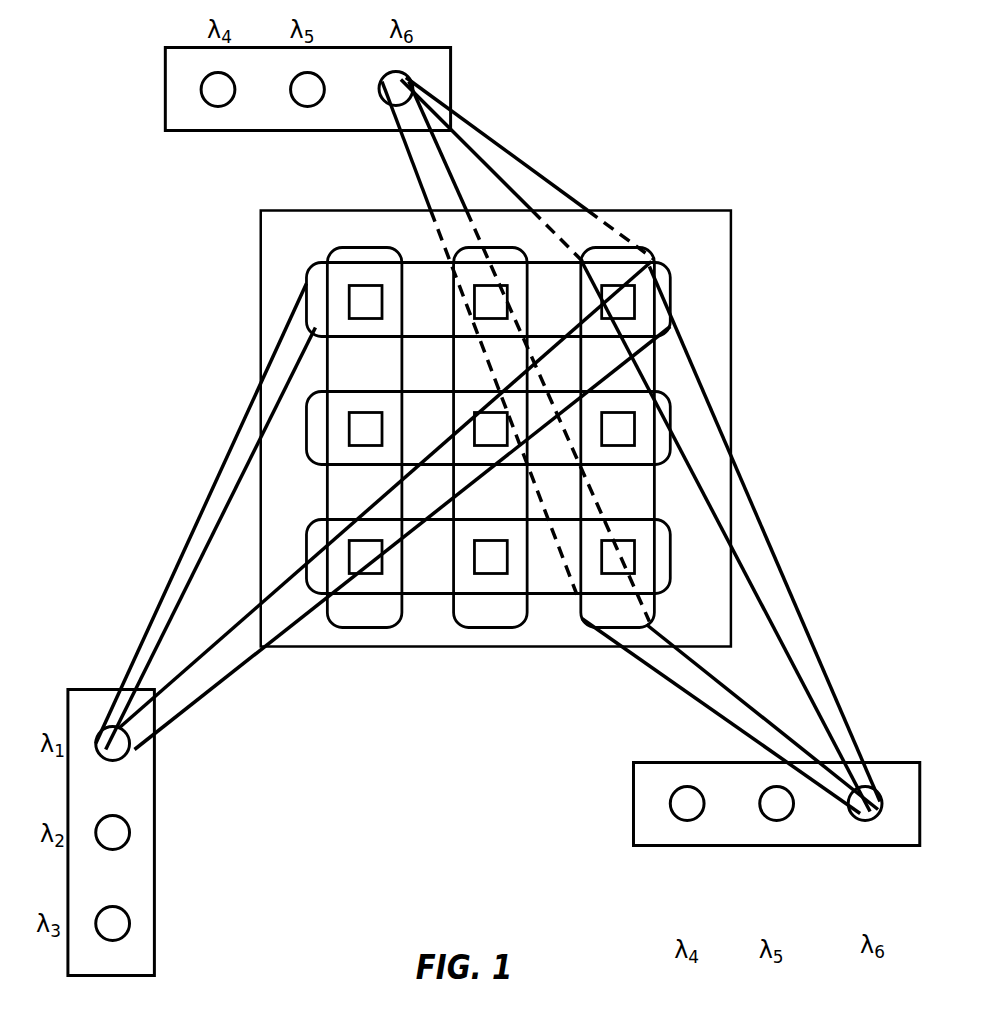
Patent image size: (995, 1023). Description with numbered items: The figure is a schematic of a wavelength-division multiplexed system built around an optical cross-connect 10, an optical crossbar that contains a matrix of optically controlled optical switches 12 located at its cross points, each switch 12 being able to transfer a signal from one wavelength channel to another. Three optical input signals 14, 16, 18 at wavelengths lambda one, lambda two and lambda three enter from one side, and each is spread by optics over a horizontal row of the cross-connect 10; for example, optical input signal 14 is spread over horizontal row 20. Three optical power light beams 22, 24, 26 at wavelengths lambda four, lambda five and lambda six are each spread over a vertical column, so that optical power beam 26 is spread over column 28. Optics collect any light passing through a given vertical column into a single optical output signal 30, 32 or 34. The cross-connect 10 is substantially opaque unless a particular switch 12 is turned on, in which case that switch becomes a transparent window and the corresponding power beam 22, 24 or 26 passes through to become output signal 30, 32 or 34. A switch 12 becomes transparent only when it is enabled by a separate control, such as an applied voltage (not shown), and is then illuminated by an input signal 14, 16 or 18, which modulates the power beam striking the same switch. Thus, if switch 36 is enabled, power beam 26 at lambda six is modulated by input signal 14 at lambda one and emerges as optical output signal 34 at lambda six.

The optical cross-connect 10 is at (732, 240).
The optically controlled optical switch 12 is at (347, 294).
The optical input signal 14 is at (128, 750).
The optical input signal 16 is at (128, 833).
The optical input signal 18 is at (128, 924).
The horizontal row 20 is at (496, 437).
The optical power light beam 22 is at (688, 820).
The optical power light beam 24 is at (778, 820).
The optical power light beam 26 is at (855, 816).
The column 28 is at (613, 158).
The optical output signal 30 is at (217, 106).
The optical output signal 32 is at (306, 106).
The optical output signal 34 is at (410, 80).
The switch 36 is at (648, 258).